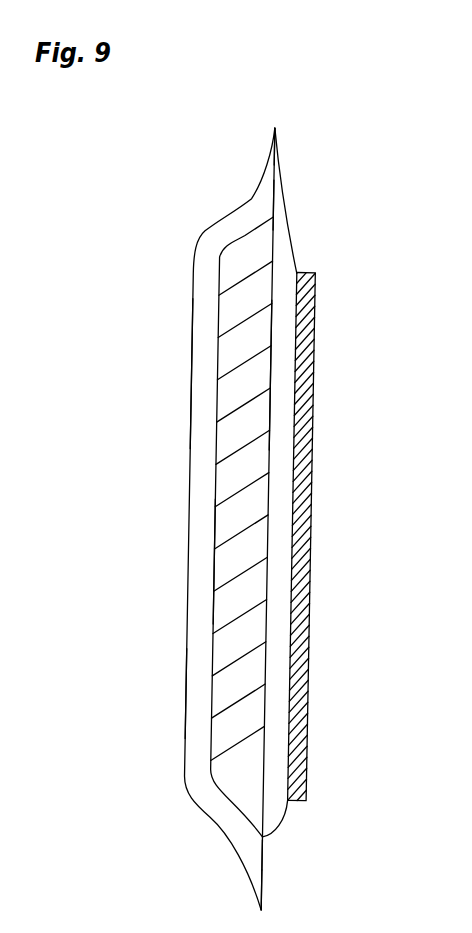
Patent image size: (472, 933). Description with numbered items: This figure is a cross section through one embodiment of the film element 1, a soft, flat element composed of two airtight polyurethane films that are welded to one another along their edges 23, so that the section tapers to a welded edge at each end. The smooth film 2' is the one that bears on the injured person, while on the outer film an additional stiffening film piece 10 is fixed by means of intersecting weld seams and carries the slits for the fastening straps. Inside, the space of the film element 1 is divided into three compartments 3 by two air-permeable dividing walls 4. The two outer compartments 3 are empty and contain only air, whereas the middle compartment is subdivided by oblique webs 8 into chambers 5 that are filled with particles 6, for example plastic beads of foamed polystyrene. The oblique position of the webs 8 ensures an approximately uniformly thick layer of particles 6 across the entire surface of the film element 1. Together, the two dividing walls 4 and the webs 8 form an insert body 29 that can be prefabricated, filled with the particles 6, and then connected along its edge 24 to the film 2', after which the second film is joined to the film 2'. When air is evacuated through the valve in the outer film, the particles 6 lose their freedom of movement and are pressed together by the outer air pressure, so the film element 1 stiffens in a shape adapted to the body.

The film element 1 is at (228, 496).
The inner film 2' is at (185, 517).
The compartments 3 is at (200, 373).
The air-permeable dividing walls 4 is at (250, 511).
The chambers 5 is at (230, 608).
The particles 6 is at (235, 670).
The oblique webs 8 is at (222, 580).
The stiffening film piece 10 is at (307, 483).
The edges 23 is at (276, 129).
The edge of insert body 24 is at (273, 202).
The insert body 29 is at (197, 692).